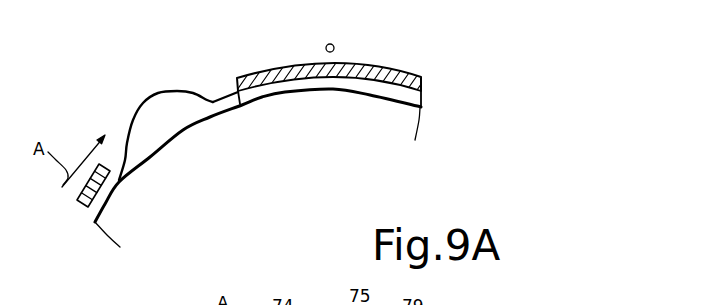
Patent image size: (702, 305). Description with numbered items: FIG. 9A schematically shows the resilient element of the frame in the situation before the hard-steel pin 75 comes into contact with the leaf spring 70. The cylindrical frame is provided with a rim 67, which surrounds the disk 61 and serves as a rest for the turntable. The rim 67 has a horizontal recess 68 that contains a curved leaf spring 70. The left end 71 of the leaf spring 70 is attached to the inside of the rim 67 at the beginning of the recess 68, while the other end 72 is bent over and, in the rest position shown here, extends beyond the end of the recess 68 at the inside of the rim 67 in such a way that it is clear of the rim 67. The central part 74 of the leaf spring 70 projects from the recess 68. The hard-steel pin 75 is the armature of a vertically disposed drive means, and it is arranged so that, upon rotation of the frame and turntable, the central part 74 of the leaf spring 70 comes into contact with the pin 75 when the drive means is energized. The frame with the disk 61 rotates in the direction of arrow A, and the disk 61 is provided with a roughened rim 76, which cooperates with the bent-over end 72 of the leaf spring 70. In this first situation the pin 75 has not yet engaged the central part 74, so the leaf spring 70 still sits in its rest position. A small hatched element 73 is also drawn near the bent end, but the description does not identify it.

The disk 61 is at (180, 218).
The rim 67 is at (423, 84).
The recess 68 is at (160, 110).
The leaf spring 70 is at (213, 102).
The left end 71 is at (254, 99).
The other end 72 is at (118, 186).
The clip insert 73 is at (97, 170).
The central part 74 is at (132, 118).
The hard-steel pin 75 is at (335, 43).
The roughened rim 76 is at (148, 158).